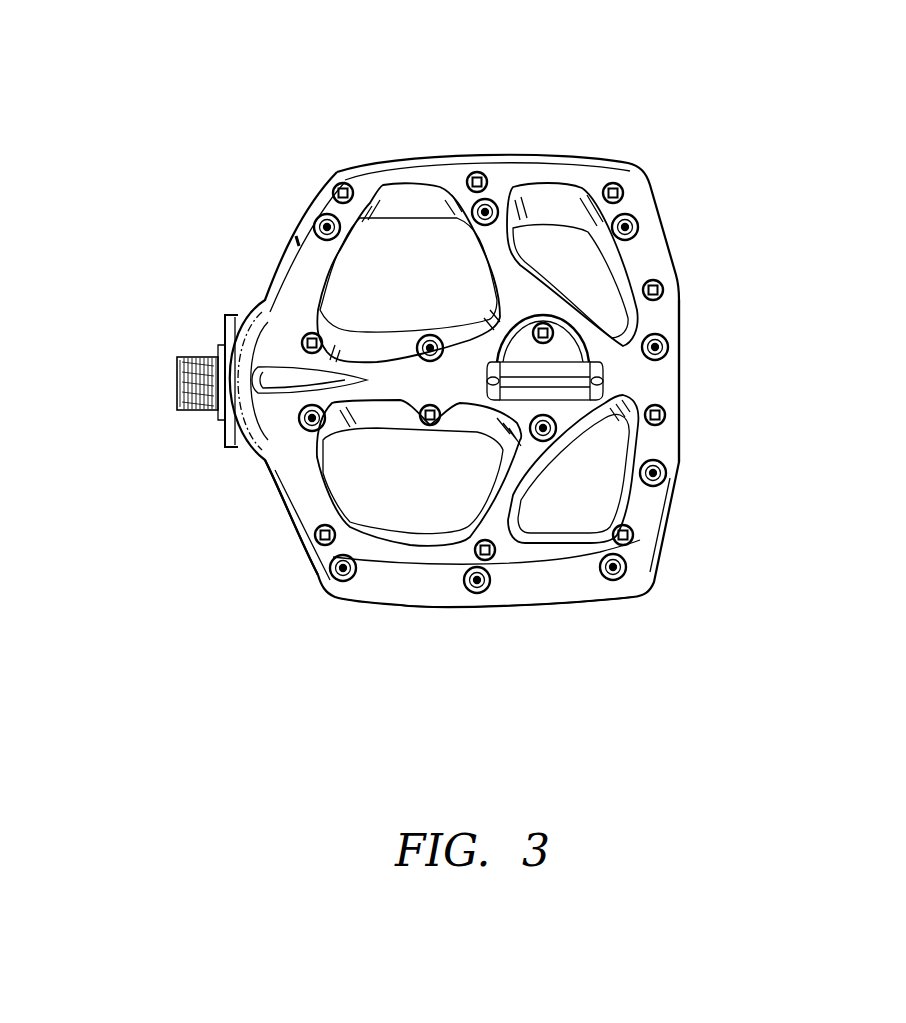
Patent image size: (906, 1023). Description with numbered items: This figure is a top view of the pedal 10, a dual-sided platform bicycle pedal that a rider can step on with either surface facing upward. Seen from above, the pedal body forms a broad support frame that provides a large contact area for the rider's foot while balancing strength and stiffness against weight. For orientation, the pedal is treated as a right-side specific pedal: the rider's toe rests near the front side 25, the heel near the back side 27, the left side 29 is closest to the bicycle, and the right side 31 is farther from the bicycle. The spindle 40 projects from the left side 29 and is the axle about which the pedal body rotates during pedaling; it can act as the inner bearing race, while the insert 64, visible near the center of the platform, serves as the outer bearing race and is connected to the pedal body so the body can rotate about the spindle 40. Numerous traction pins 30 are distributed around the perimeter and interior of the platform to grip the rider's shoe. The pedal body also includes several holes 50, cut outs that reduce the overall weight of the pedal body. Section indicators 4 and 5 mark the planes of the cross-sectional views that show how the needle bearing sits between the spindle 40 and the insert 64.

The pedal 10 is at (198, 80).
The front side 25 is at (466, 152).
The back side 27 is at (421, 610).
The left side 29 is at (262, 465).
The traction pins 30 is at (297, 238).
The right side 31 is at (681, 333).
The spindle 40 is at (193, 355).
The holes 50 is at (416, 280).
The insert 64 is at (568, 355).
The section line 4- 4 is at (172, 383).
The section line 5- 5 is at (543, 135).